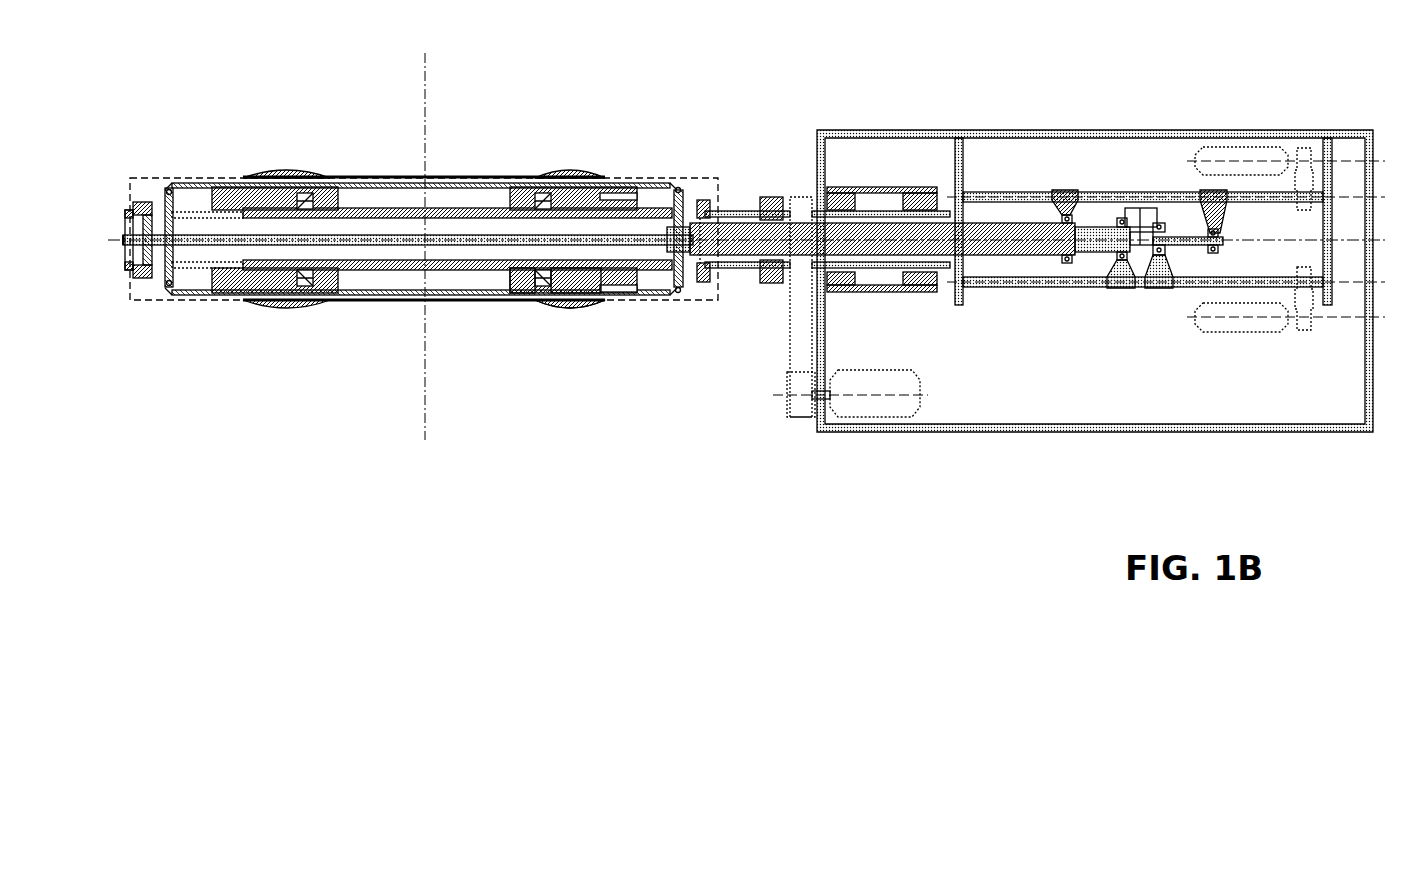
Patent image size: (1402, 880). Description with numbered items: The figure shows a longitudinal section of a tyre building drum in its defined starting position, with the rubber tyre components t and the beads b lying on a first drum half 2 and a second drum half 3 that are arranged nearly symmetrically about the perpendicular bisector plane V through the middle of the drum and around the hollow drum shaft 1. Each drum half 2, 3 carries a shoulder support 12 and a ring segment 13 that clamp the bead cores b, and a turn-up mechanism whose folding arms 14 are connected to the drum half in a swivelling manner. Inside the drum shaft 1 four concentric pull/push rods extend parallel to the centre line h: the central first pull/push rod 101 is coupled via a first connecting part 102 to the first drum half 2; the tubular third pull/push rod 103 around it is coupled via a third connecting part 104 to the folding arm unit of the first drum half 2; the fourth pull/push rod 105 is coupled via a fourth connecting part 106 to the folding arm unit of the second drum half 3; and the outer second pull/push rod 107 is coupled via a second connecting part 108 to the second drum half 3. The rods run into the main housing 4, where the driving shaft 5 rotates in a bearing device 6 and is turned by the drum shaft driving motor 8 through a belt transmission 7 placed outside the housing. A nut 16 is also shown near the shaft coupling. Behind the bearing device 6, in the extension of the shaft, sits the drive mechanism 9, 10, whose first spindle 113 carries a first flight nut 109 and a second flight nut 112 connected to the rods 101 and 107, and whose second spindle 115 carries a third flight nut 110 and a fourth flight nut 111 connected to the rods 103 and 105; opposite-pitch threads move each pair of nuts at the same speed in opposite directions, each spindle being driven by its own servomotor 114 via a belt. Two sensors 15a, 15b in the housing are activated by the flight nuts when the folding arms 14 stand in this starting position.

The drum shaft 1 is at (415, 208).
The first drum half 2 is at (224, 183).
The second drum half 3 is at (641, 182).
The main housing 4 is at (817, 147).
The driving shaft 5 is at (822, 200).
The bearing device 6 is at (880, 187).
The belt transmission 7 is at (790, 350).
The drum shaft driving motor 8 is at (878, 370).
The drive mechanism 9 is at (1114, 188).
The drive mechanism 10 is at (1134, 362).
The shoulder support 12 is at (523, 292).
The ring segment 13 is at (546, 302).
The folding arms 14 is at (580, 296).
The sensor 15a is at (1130, 208).
The sensor 15b is at (1148, 210).
The nut 16 is at (769, 284).
The first pull/push rod 101 is at (142, 278).
The first connecting part 102 is at (143, 202).
The third pull/push rod 103 is at (178, 263).
The third connecting part 104 is at (172, 188).
The fourth pull/push rod 105 is at (670, 265).
The fourth connecting part 106 is at (678, 290).
The second pull/push rod 107 is at (735, 258).
The second connecting part 108 is at (700, 283).
The first flight nut 109 is at (1210, 190).
The third flight nut 110 is at (1158, 289).
The fourth flight nut 111 is at (1113, 289).
The second flight nut 112 is at (1060, 190).
The first spindle 113 is at (1333, 193).
The servomotor 114 is at (1210, 161).
The second spindle 115 is at (1333, 285).
The perpendicular bisector plane V is at (435, 236).
The tyre components t is at (470, 177).
The bead cores b is at (302, 177).
The centre line h is at (124, 241).